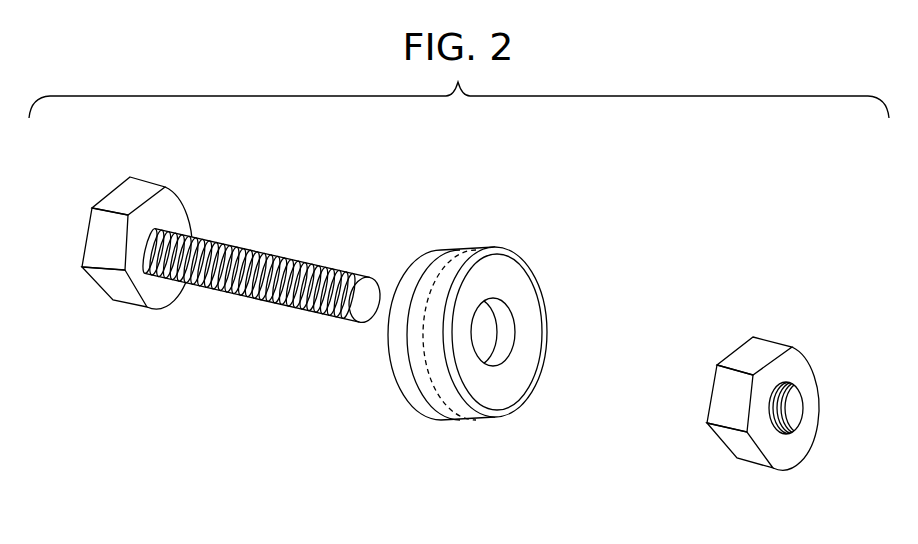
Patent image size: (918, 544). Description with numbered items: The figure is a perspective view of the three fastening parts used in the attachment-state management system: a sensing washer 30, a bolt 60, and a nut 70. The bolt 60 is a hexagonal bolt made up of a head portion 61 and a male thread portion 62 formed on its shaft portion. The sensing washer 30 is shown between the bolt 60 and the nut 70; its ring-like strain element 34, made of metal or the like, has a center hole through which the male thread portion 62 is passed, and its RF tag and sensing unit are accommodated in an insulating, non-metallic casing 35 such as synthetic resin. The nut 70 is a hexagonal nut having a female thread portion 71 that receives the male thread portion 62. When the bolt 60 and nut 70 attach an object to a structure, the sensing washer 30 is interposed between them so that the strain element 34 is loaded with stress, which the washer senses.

The sensing washer 30 is at (489, 324).
The strain element 34 is at (523, 297).
The casing 35 is at (462, 416).
The bolt 60 is at (224, 268).
The head portion 61 is at (102, 294).
The male thread portion 62 is at (281, 305).
The nut 70 is at (768, 393).
The female thread portion 71 is at (797, 422).